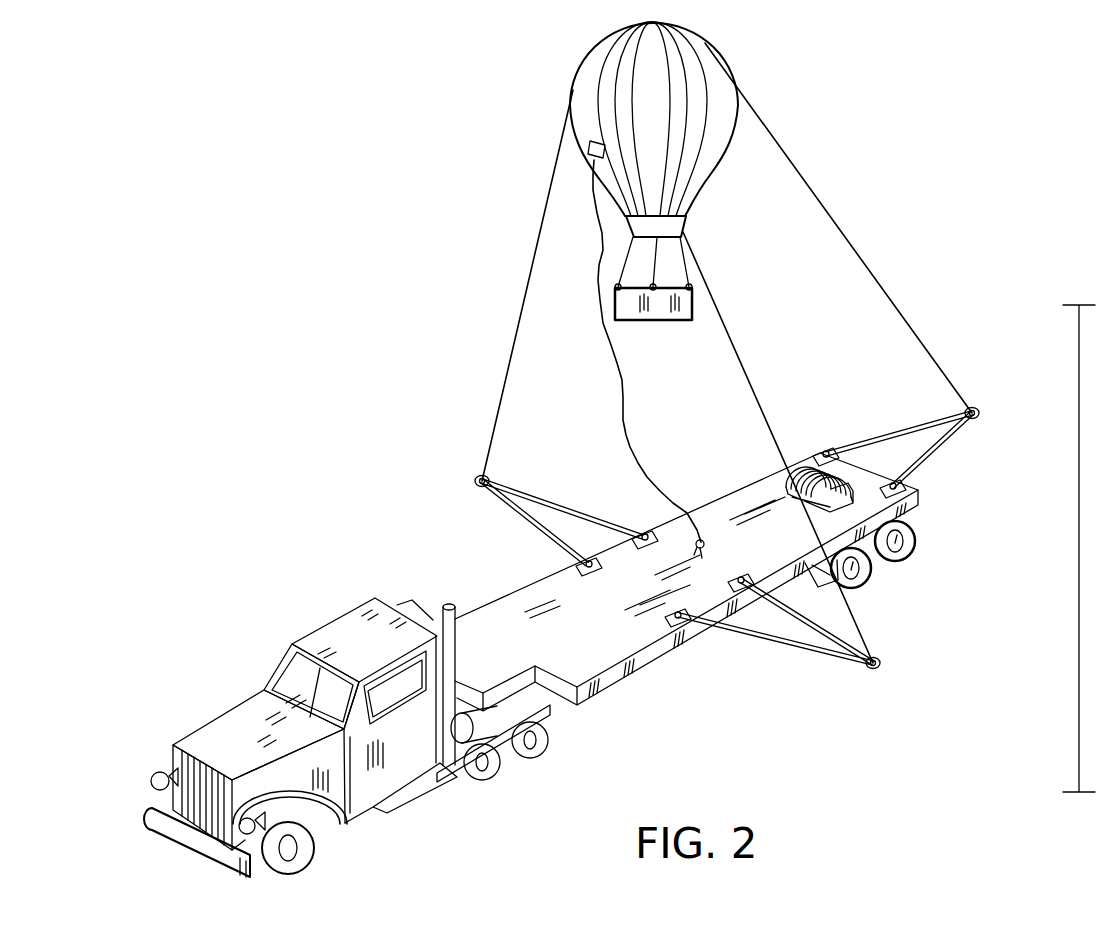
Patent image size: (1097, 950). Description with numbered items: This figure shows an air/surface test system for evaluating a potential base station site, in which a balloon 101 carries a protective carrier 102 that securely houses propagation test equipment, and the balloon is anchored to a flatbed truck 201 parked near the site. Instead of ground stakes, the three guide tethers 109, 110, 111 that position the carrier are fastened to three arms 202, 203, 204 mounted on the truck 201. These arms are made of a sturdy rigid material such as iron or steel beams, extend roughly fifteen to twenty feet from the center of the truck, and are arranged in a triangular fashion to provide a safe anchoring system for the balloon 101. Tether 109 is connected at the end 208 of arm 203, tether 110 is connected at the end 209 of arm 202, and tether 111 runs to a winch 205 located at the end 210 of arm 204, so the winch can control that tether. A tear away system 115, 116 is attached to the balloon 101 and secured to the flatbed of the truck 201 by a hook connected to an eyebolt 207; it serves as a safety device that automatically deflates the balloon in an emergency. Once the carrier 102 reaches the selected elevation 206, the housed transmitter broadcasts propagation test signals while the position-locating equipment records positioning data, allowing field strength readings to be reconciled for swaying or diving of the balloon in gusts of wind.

The balloon 101 is at (717, 80).
The protective carrier 102 is at (693, 301).
The tether 109 is at (532, 258).
The tether 110 is at (746, 376).
The tether 111 is at (893, 302).
The tear away system 115 is at (630, 424).
The tear away system 116 is at (588, 148).
The flatbed truck 201 is at (230, 733).
The arm 202 is at (782, 645).
The arm 203 is at (553, 504).
The arm 204 is at (940, 450).
The winch 205 is at (848, 488).
The selected elevation 206 is at (1078, 566).
The eyebolt 207 is at (701, 530).
The end of arm 203 208 is at (476, 479).
The end of arm 202 209 is at (880, 667).
The end of arm 204 210 is at (977, 410).